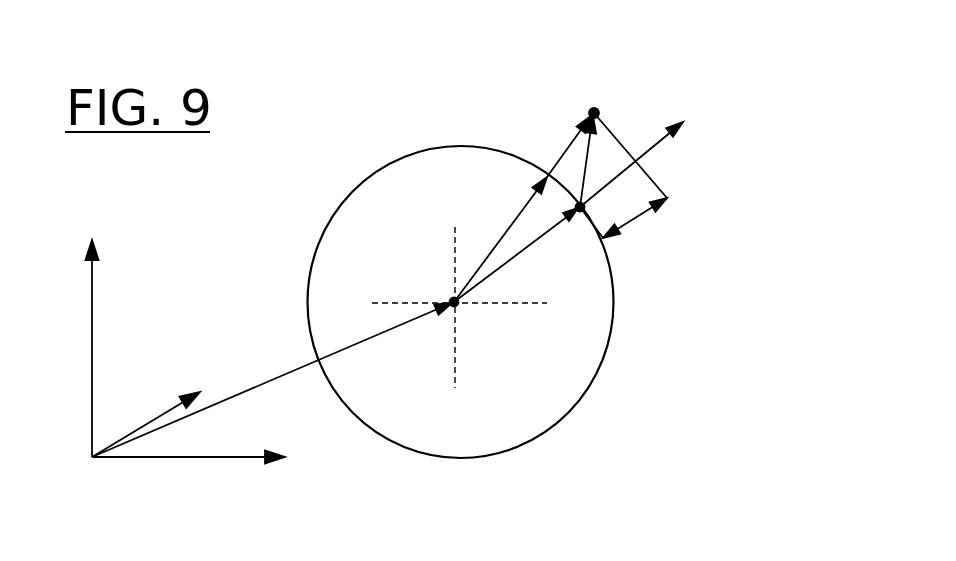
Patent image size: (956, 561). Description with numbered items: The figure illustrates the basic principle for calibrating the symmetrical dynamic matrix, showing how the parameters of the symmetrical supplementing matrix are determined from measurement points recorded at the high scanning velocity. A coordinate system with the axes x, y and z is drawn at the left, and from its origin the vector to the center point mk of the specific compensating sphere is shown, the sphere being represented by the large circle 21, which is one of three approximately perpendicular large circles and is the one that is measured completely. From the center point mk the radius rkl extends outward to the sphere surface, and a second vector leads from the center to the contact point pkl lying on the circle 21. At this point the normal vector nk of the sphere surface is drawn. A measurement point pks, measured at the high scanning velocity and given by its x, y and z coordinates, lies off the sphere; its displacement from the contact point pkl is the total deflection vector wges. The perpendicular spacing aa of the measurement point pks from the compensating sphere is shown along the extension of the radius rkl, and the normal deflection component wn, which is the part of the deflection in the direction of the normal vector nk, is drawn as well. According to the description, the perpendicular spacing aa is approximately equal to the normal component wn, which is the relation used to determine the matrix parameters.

The large circle 21 is at (528, 445).
The center point mk is at (460, 305).
The radius rkl is at (533, 240).
The perpendicular spacing aa is at (566, 155).
The contact point pkl is at (573, 215).
The normal vector nk is at (665, 140).
The total deflection vector wges is at (585, 165).
The measurement point pks is at (583, 122).
The normal deflection component wn is at (632, 218).
The x axis x is at (208, 460).
The y axis y is at (150, 422).
The z axis z is at (93, 284).